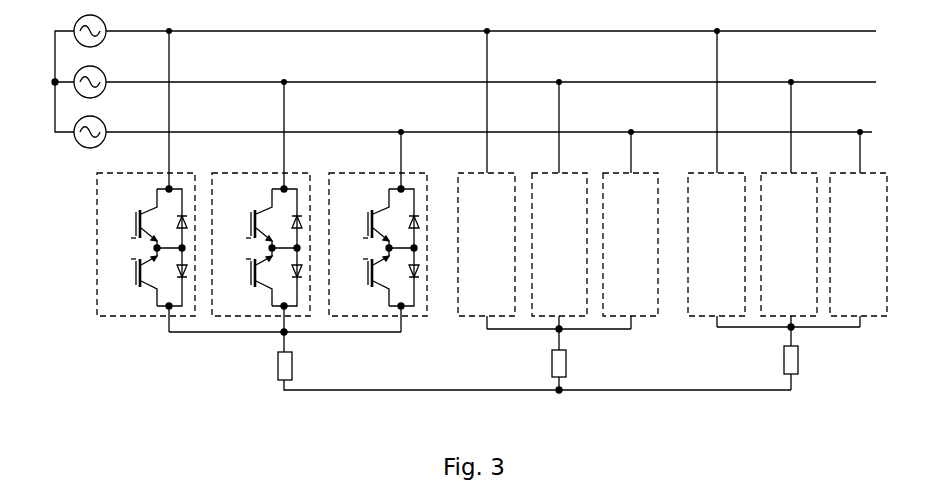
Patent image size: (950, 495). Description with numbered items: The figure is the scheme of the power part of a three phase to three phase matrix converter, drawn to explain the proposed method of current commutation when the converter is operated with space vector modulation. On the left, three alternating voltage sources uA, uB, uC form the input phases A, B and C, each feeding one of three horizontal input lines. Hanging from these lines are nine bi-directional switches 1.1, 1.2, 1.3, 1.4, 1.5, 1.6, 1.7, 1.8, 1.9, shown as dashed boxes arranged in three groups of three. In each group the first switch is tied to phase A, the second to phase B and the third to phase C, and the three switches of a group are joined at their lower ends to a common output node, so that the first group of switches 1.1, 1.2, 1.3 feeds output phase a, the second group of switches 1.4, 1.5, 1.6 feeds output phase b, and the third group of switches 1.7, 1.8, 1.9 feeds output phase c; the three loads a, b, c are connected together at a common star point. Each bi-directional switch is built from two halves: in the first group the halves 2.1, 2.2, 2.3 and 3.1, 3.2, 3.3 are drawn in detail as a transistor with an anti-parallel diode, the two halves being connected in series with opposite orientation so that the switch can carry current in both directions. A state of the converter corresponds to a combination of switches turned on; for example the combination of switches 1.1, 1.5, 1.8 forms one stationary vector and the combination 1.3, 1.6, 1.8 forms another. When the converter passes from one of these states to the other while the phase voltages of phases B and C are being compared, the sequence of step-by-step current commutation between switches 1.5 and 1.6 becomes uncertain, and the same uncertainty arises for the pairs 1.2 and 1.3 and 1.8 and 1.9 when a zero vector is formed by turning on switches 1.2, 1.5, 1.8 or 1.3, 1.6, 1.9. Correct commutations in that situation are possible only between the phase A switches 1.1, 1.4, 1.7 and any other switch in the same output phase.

The bi-directional switch 1.1 is at (146, 181).
The bi-directional switch 1.2 is at (261, 217).
The bi-directional switch 1.3 is at (378, 232).
The bi-directional switch 1.4 is at (486, 180).
The bi-directional switch 1.5 is at (559, 216).
The bi-directional switch 1.6 is at (630, 230).
The bi-directional switch 1.7 is at (716, 179).
The bi-directional switch 1.8 is at (789, 214).
The bi-directional switch 1.9 is at (858, 229).
The half of bi-directional switch 2.1 is at (145, 223).
The half of bi-directional switch 2.2 is at (260, 223).
The half of bi-directional switch 2.3 is at (377, 223).
The half of bi-directional switch 3.1 is at (145, 274).
The half of bi-directional switch 3.2 is at (260, 274).
The half of bi-directional switch 3.3 is at (377, 274).
The load phase a is at (480, 361).
The load phase b is at (559, 358).
The load phase c is at (788, 357).
The phase voltage source A uA is at (112, 44).
The phase voltage source B uB is at (168, 77).
The phase voltage source C uC is at (228, 115).